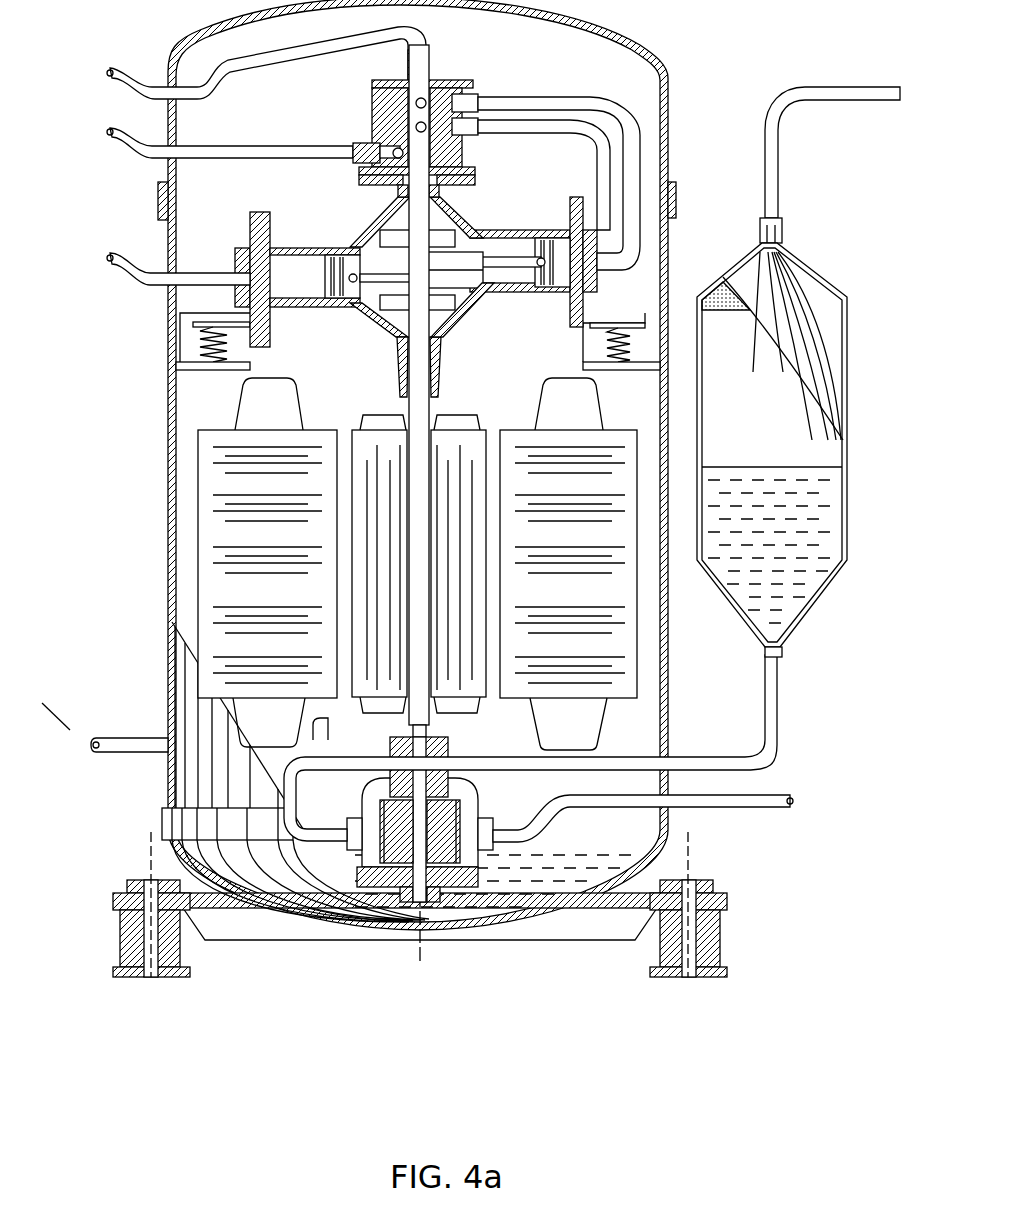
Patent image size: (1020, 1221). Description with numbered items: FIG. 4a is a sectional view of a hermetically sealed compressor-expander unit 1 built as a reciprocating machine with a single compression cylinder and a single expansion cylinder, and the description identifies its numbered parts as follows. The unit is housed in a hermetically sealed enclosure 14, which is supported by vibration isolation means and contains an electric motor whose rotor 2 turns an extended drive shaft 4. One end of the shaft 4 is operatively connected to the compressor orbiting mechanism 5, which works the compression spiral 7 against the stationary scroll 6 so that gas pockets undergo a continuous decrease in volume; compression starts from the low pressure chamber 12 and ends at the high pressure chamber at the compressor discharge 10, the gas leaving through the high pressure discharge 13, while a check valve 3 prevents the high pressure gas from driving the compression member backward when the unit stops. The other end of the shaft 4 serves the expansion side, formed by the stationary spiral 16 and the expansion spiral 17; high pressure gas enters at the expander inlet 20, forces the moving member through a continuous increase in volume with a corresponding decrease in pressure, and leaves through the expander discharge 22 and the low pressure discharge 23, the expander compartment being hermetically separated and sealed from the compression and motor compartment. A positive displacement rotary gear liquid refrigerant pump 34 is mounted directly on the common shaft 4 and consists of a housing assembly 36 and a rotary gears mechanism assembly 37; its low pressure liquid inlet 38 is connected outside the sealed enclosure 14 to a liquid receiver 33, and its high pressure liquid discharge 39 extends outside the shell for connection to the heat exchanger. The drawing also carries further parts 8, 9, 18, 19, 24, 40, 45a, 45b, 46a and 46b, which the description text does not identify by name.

The compressor-expander unit 1 is at (183, 1015).
The rotor 2 is at (478, 438).
The check valve 3 is at (417, 564).
The drive shaft 4 is at (420, 425).
The compressor orbiting mechanism 5 is at (672, 256).
The stationary scroll 6 is at (370, 323).
The compression spiral 7 is at (302, 248).
The first cylinder head 8 is at (250, 230).
The first cylinder wall 9 is at (288, 312).
The compressor discharge 10 is at (352, 247).
The low pressure chamber 12 is at (162, 265).
The high pressure discharge 13 is at (145, 737).
The hermetically sealed enclosure 14 is at (168, 655).
The stationary spiral 16 is at (452, 322).
The expansion spiral 17 is at (497, 230).
The second cylinder head 18 is at (588, 228).
The crank 19 is at (428, 243).
The expander inlet 20 is at (543, 230).
The expander discharge 22 is at (249, 63).
The low pressure discharge 23 is at (210, 136).
The spring 24 is at (222, 343).
The liquid receiver 33 is at (845, 490).
The liquid refrigerant pump 34 is at (538, 853).
The housing assembly 36 is at (497, 805).
The rotary gears mechanism assembly 37 is at (372, 817).
The low pressure liquid inlet 38 is at (703, 757).
The high pressure liquid discharge 39 is at (765, 793).
The upper bearing head 40 is at (444, 83).
The discharge passage 45a is at (427, 48).
The discharge passage 45b is at (488, 92).
The passage 46a is at (488, 136).
The passage 46b is at (356, 143).